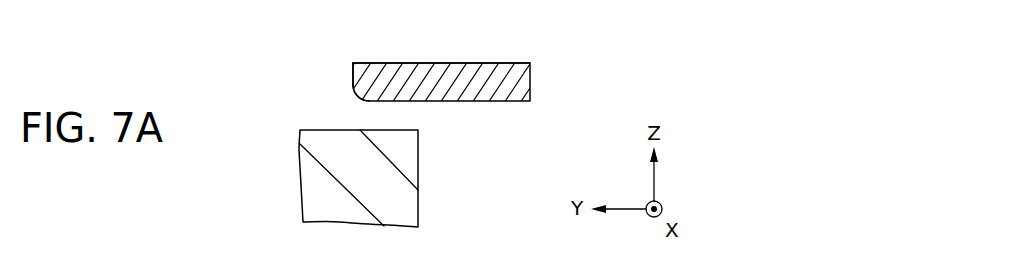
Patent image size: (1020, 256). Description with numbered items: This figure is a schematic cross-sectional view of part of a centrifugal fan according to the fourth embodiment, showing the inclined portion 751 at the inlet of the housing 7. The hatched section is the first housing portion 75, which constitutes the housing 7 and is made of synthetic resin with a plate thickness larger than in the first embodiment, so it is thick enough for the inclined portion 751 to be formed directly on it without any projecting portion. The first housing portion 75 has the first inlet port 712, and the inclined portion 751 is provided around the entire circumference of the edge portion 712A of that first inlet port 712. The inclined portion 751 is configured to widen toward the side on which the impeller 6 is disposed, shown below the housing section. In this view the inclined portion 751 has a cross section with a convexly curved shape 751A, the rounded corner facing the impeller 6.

The housing 7 is at (374, 63).
The first housing portion 75 is at (487, 72).
The edge portion 712A is at (380, 64).
The first inlet port 712 is at (353, 70).
The inclined portion 751 is at (284, 99).
The convexly curved shape 751A is at (361, 97).
The impeller 6 is at (407, 161).